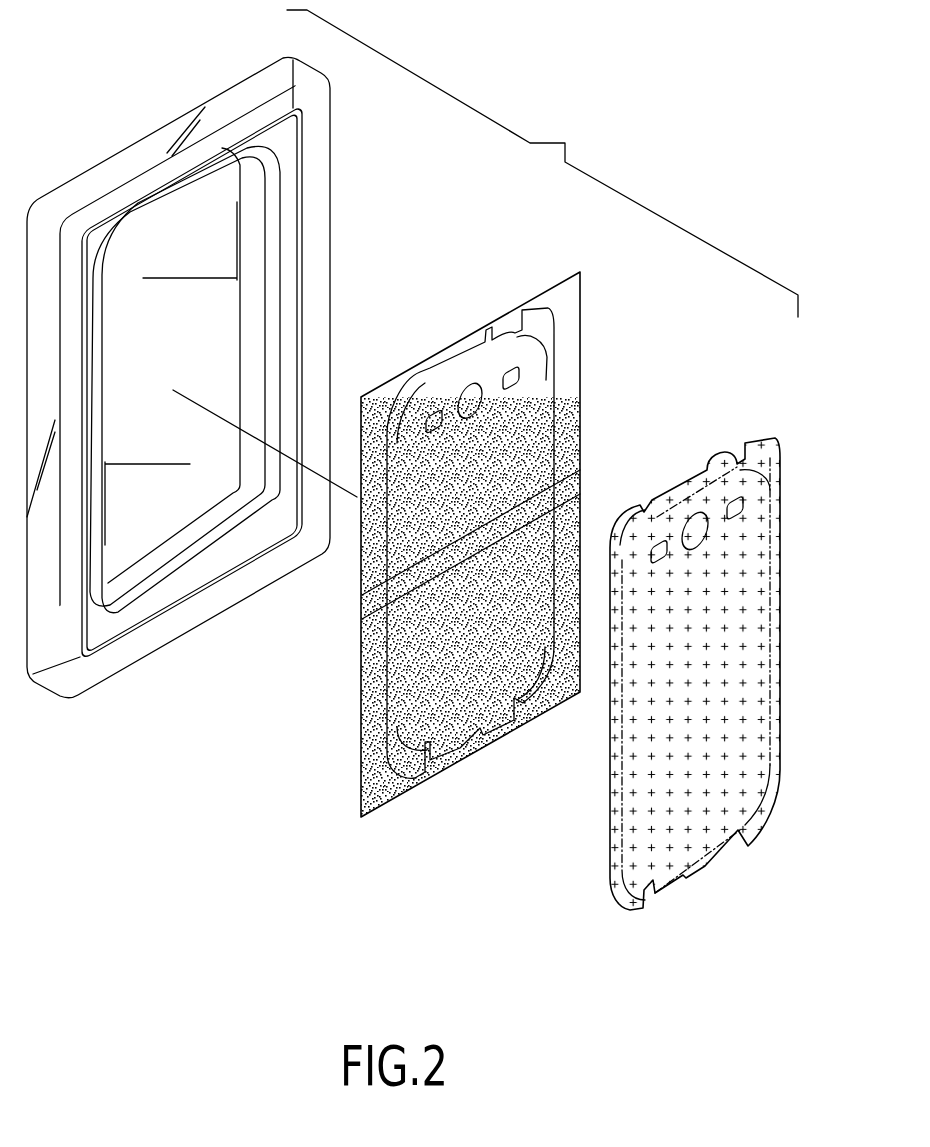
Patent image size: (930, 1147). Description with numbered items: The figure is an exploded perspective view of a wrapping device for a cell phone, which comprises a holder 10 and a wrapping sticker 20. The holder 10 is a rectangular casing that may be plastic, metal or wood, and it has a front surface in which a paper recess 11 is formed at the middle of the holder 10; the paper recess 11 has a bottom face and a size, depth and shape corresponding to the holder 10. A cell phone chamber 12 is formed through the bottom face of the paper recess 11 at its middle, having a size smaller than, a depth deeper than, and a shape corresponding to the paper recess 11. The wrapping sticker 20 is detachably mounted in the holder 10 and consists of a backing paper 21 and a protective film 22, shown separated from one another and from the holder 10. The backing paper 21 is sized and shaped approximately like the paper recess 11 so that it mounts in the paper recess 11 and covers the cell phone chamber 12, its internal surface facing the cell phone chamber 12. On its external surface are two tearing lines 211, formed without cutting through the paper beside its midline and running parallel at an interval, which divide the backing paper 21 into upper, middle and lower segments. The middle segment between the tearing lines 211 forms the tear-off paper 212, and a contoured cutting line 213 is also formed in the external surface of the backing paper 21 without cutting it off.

The holder 10 is at (208, 664).
The paper recess 11 is at (298, 194).
The cell phone chamber 12 is at (278, 262).
The wrapping sticker 20 is at (575, 629).
The backing paper 21 is at (510, 544).
The tearing lines 211 is at (567, 470).
The tear-off paper 212 is at (570, 488).
The cutting line 213 is at (580, 378).
The protective film 22 is at (700, 898).